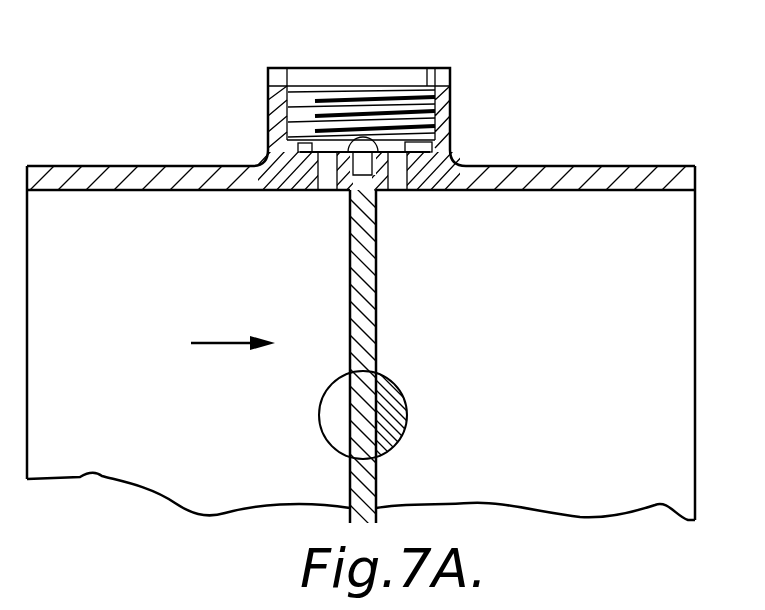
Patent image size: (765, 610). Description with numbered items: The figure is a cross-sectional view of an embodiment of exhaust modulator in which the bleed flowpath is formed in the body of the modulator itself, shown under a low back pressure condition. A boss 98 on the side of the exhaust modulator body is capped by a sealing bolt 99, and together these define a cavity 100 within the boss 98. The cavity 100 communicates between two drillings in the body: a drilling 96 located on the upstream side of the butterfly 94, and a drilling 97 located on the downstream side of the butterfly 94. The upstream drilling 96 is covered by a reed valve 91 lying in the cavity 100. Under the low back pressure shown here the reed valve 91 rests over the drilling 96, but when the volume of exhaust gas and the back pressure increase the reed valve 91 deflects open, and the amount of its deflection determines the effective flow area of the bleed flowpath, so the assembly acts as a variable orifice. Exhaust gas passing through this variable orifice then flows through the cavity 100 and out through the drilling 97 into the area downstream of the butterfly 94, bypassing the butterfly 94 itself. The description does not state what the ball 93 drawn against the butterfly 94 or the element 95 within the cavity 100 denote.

The reed valve 91 is at (272, 142).
The ball 93 is at (340, 432).
The butterfly 94 is at (368, 318).
The spring 95 is at (405, 126).
The drilling 96 is at (327, 180).
The drilling 97 is at (400, 193).
The boss 98 is at (440, 100).
The sealing bolt 99 is at (332, 76).
The cavity 100 is at (420, 148).